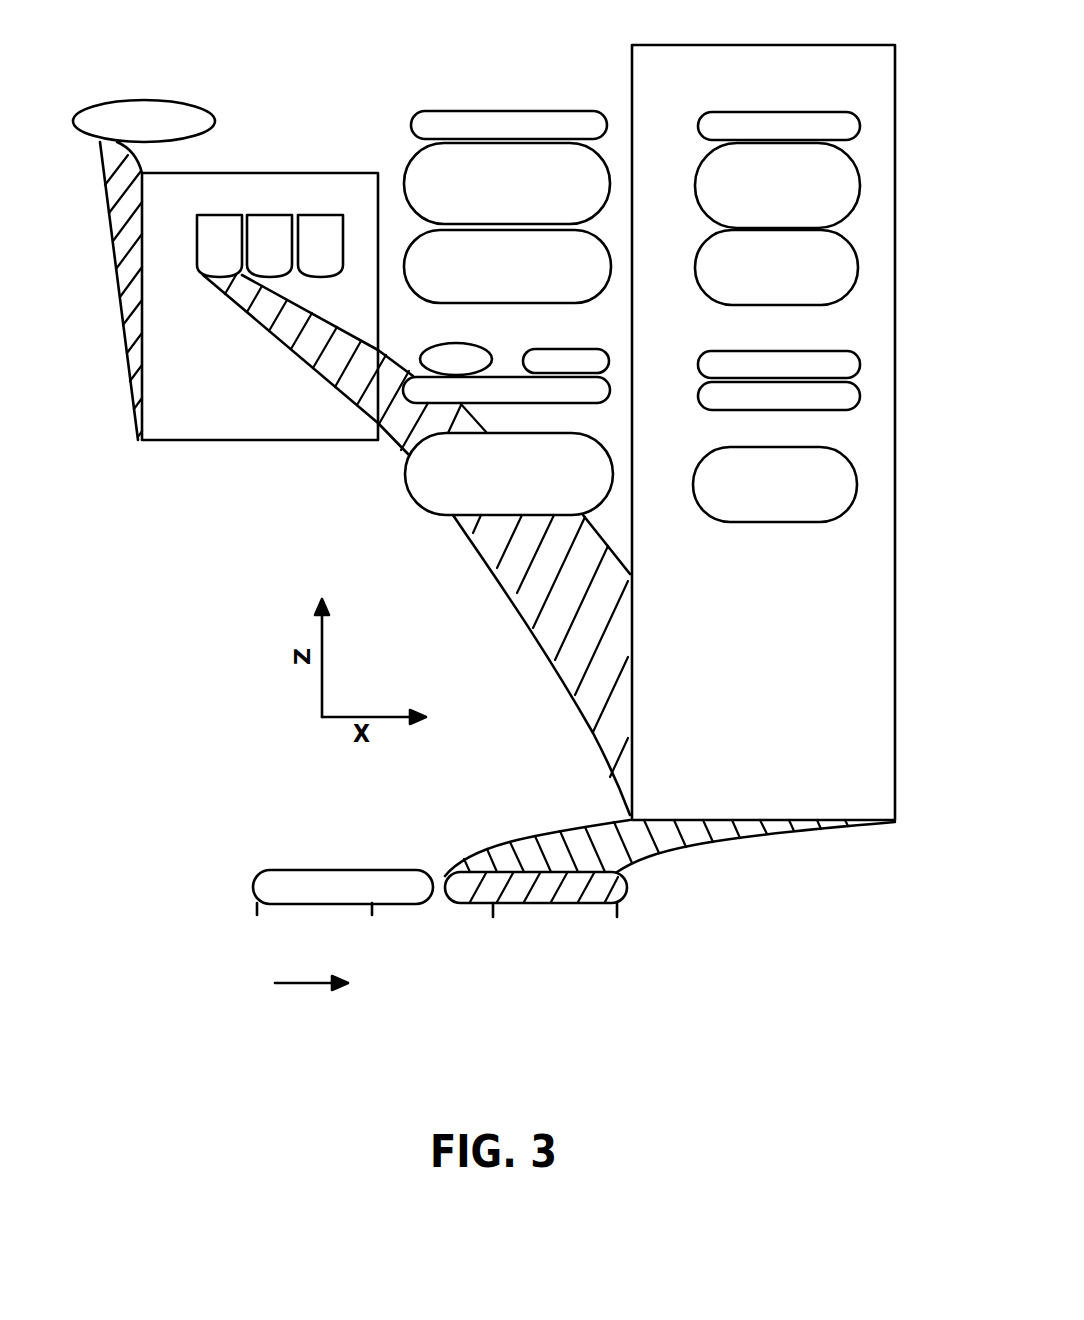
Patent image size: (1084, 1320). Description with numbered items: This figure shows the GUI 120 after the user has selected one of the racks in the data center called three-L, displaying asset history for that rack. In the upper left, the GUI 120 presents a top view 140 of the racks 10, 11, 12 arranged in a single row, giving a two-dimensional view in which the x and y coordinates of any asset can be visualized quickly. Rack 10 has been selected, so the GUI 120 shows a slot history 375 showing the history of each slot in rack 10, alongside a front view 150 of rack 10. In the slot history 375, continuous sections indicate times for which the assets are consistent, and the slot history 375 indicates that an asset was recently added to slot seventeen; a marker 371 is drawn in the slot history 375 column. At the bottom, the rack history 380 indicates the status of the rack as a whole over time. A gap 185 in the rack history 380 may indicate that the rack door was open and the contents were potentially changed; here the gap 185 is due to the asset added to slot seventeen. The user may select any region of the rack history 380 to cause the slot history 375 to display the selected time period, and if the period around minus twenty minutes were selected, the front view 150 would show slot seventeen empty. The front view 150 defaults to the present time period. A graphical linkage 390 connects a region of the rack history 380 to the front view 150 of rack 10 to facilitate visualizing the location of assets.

The GUI 120 is at (323, 58).
The top view 140 is at (192, 207).
The rack 10 is at (233, 259).
The rack 11 is at (283, 259).
The rack 12 is at (334, 259).
The slot history 375 is at (507, 92).
The slot history marker 371 is at (472, 368).
The front view 150 is at (832, 65).
The rack history 380 is at (290, 818).
The gap 185 is at (440, 862).
The graphical linkage 390 is at (663, 855).